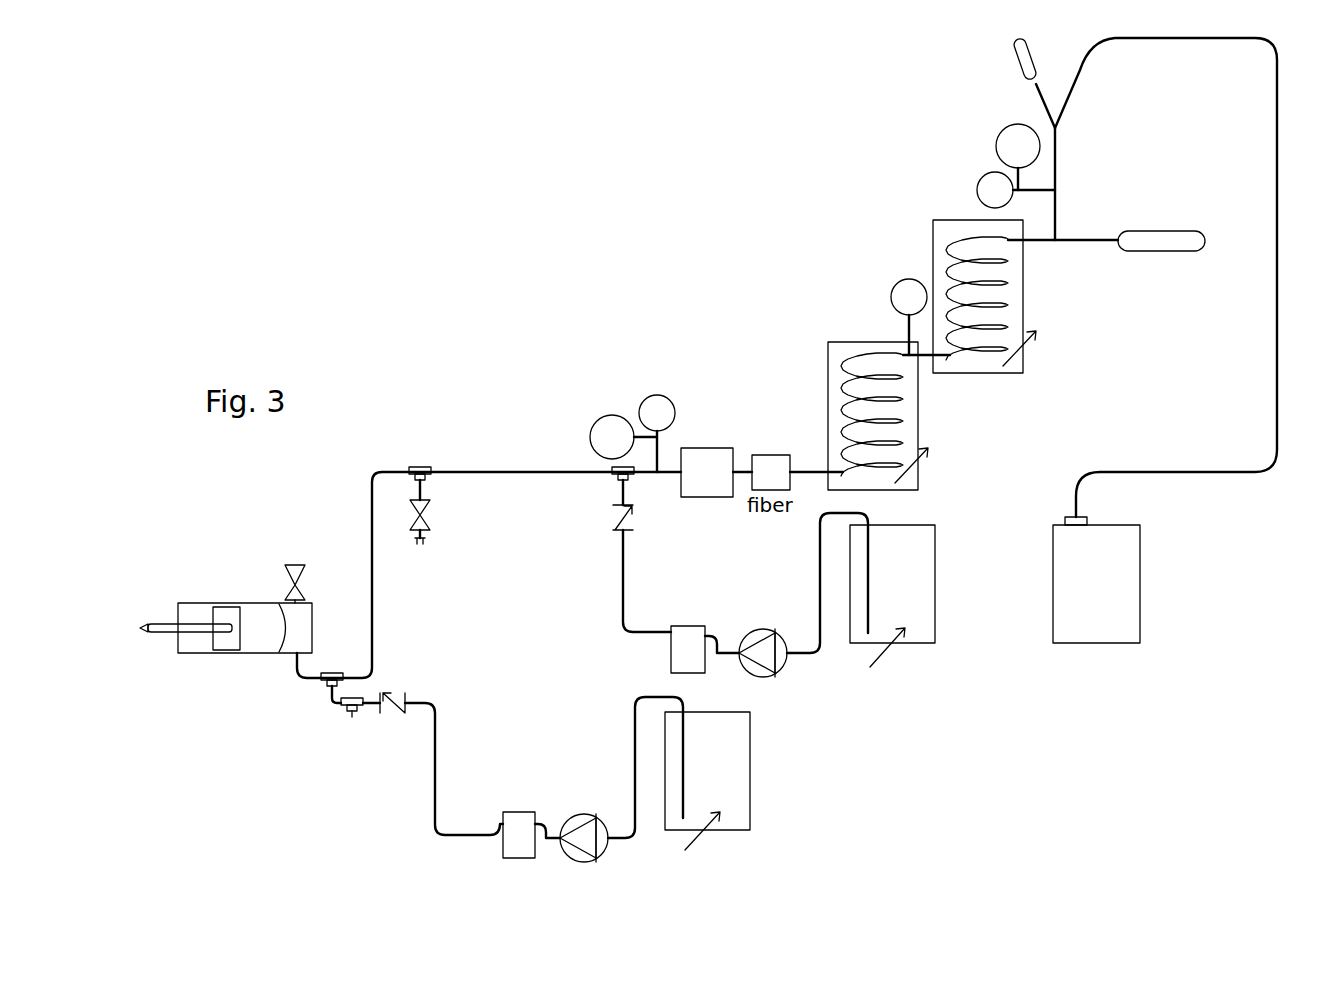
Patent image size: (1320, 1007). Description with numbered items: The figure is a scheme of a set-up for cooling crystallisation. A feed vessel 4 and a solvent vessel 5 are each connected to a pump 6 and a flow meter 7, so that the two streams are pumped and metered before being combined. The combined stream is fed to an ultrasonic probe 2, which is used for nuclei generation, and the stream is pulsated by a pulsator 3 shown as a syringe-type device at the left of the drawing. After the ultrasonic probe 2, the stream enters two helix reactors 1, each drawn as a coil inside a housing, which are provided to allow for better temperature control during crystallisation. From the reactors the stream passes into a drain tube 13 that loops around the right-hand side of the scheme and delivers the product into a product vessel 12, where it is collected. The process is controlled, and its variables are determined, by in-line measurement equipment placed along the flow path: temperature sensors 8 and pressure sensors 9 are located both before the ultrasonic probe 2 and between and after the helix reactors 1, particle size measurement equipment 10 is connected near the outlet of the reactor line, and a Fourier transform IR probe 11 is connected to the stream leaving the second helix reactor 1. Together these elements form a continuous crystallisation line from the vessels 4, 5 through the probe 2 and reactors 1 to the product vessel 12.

The helix reactor 1 is at (828, 365).
The ultrasonic probe 2 is at (712, 448).
The pulsator 3 is at (205, 600).
The feed vessel 4 is at (937, 582).
The solvent vessel 5 is at (752, 770).
The pump 6 is at (764, 628).
The flow meter 7 is at (690, 625).
The temperature sensor 8 is at (657, 395).
The pressure sensor 9 is at (610, 415).
The particle size measurement equipment 10 is at (1015, 42).
The Fourier transform IR probe 11 is at (1162, 230).
The product vessel 12 is at (1142, 583).
The drain tube 13 is at (1178, 45).